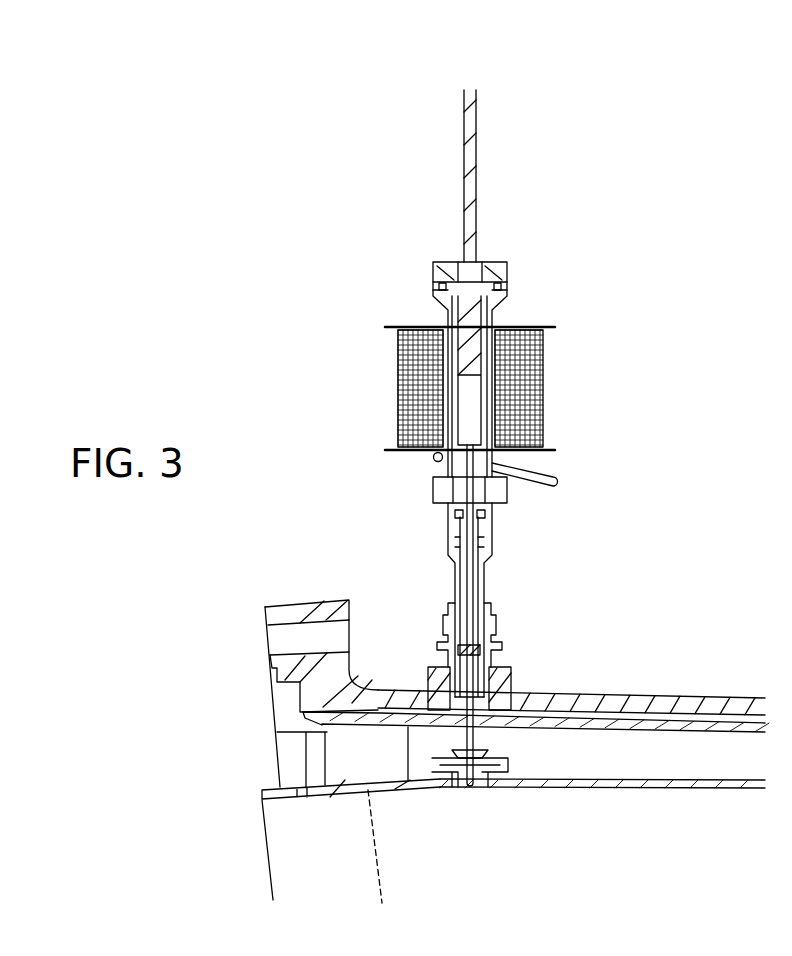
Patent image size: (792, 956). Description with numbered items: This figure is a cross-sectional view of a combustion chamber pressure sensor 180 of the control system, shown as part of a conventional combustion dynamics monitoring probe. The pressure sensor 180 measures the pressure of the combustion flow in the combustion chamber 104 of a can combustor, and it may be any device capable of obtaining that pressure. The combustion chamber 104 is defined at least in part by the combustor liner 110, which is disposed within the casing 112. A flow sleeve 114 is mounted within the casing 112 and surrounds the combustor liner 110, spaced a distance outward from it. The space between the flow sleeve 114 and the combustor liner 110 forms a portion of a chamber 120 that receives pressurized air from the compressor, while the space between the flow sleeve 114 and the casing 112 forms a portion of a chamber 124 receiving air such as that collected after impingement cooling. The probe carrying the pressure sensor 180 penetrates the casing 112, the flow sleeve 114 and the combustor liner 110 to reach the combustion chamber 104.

The combustion chamber 104 is at (513, 832).
The combustor liner 110 is at (260, 794).
The casing 112 is at (260, 612).
The flow sleeve 114 is at (276, 728).
The chamber 120 is at (688, 762).
The chamber 124 is at (670, 718).
The pressure sensor 180 is at (395, 385).